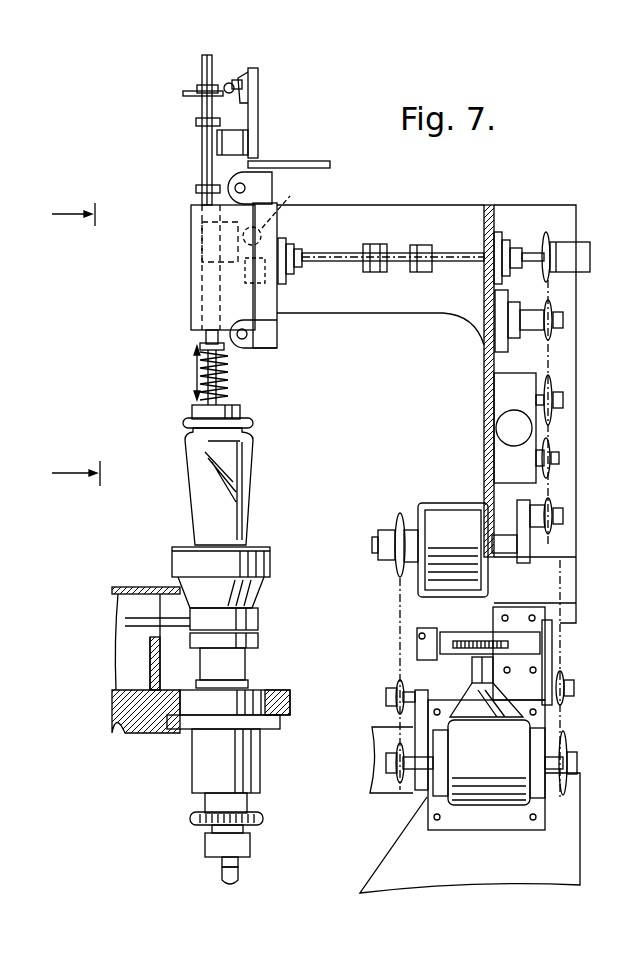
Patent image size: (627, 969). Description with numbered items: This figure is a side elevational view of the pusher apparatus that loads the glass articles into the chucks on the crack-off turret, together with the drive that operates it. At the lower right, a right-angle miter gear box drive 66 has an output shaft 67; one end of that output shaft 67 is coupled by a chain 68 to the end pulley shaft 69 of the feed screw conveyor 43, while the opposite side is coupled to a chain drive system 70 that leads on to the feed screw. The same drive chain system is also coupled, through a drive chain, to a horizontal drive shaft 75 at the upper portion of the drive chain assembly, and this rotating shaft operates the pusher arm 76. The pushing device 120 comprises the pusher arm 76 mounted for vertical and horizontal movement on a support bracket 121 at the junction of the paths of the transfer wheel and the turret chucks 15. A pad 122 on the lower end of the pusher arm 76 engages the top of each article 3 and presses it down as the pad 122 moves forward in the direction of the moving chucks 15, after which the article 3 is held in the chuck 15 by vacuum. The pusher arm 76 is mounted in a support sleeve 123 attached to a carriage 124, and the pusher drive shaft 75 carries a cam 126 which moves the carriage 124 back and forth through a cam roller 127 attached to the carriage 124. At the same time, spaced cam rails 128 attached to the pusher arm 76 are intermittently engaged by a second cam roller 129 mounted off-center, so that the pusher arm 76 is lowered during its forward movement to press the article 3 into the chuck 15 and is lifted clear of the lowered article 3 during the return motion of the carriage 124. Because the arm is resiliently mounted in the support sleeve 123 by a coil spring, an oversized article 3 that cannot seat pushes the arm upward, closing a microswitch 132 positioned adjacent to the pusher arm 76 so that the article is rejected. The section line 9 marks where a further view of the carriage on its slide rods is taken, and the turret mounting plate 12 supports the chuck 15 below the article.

The article 3 is at (240, 486).
The section line 9- 9 is at (86, 346).
The base plate 12 is at (288, 692).
The chuck 15 is at (268, 566).
The feed screw conveyor 43 is at (446, 550).
The right-angle miter gear box drive 66 is at (470, 775).
The output shaft 67 is at (562, 750).
The chain 68 is at (398, 598).
The end pulley shaft 69 is at (401, 512).
The chain drive system 70 is at (556, 651).
The horizontal drive shaft 75 is at (463, 268).
The pusher arm 76 is at (205, 139).
The pushing device 120 is at (219, 274).
The support bracket 121 is at (409, 213).
The pad 122 is at (243, 411).
The support sleeve 123 is at (181, 339).
The carriage 124 is at (190, 266).
The cam 126 is at (280, 229).
The cam roller 127 is at (280, 285).
The cam rails 128 is at (245, 248).
The second cam roller 129 is at (275, 214).
The microswitch 132 is at (247, 83).